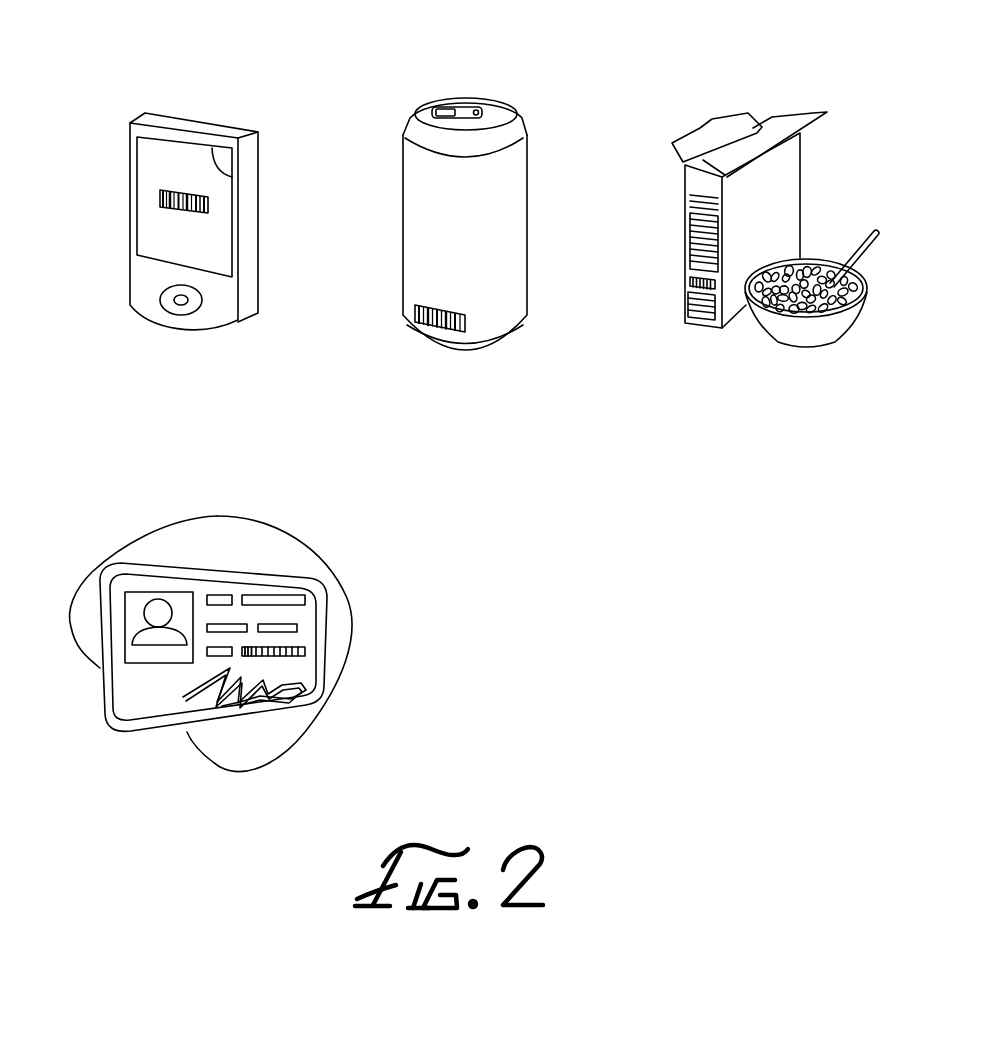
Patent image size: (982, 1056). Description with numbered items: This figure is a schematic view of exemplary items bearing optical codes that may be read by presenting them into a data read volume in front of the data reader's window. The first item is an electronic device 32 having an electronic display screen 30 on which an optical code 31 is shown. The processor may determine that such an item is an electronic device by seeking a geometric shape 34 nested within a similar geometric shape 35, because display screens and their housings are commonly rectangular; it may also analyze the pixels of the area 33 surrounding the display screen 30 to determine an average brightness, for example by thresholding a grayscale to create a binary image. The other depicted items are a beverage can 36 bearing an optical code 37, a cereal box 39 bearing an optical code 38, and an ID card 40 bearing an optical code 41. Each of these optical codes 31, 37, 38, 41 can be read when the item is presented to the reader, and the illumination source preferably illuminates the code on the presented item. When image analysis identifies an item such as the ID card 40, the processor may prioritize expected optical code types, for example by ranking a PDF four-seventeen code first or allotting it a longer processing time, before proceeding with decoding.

The electronic display screen 30 is at (212, 228).
The optical code 31 is at (170, 188).
The electronic device 32 is at (175, 123).
The area surrounding the display screen 33 is at (132, 160).
The shape 34 is at (232, 177).
The shape 35 is at (128, 267).
The beverage can 36 is at (512, 333).
The optical code 37 is at (427, 325).
The optical code 38 is at (707, 322).
The cereal box 39 is at (688, 187).
The ID card 40 is at (110, 722).
The optical code 41 is at (304, 650).